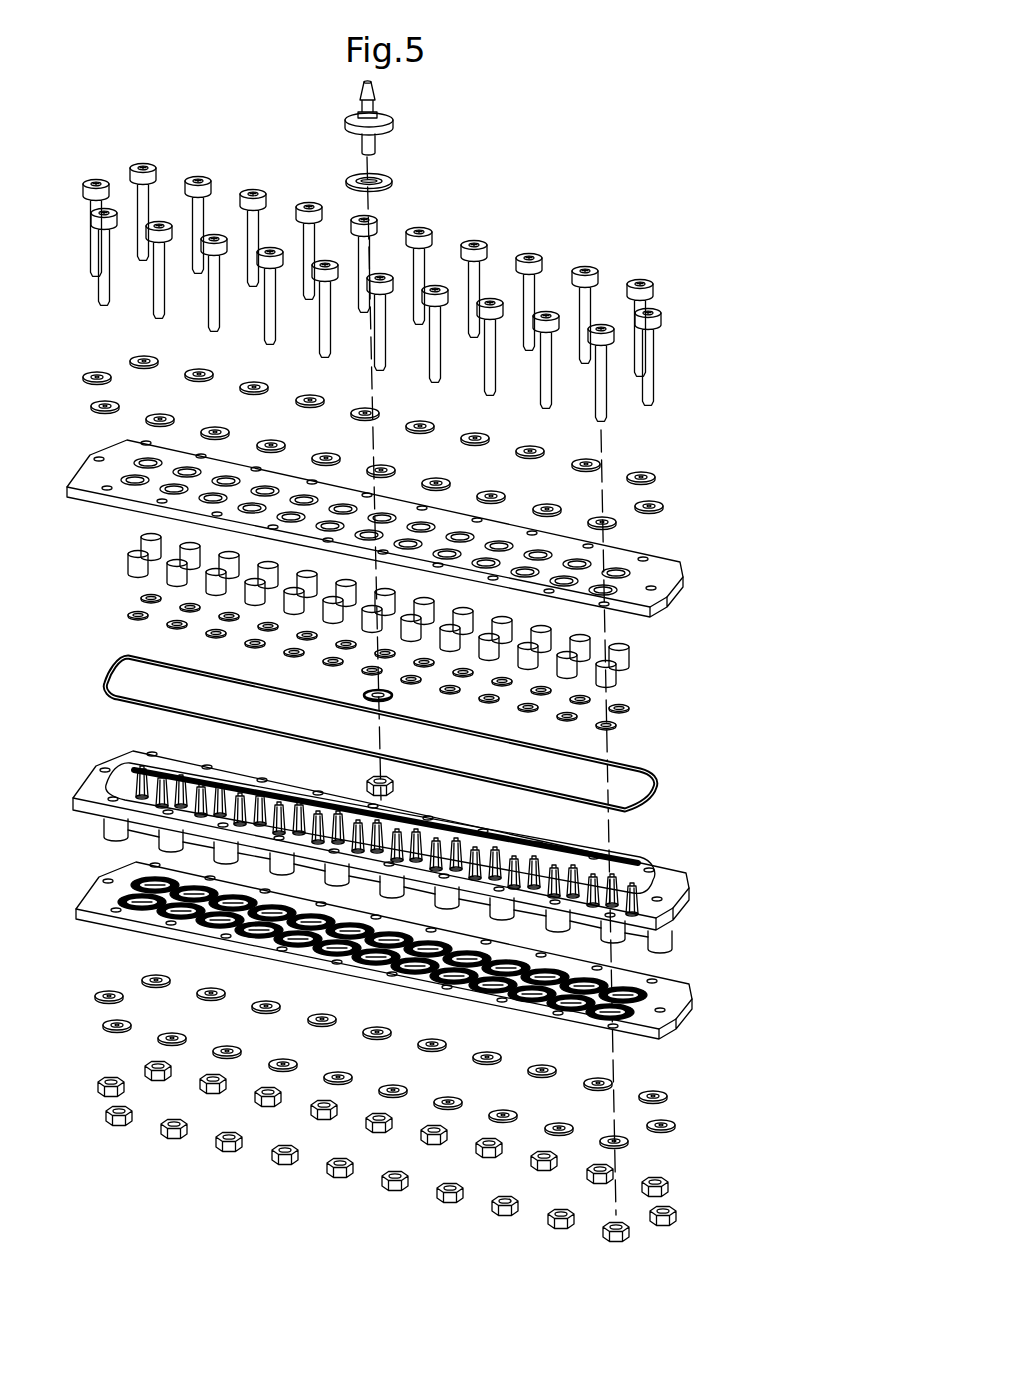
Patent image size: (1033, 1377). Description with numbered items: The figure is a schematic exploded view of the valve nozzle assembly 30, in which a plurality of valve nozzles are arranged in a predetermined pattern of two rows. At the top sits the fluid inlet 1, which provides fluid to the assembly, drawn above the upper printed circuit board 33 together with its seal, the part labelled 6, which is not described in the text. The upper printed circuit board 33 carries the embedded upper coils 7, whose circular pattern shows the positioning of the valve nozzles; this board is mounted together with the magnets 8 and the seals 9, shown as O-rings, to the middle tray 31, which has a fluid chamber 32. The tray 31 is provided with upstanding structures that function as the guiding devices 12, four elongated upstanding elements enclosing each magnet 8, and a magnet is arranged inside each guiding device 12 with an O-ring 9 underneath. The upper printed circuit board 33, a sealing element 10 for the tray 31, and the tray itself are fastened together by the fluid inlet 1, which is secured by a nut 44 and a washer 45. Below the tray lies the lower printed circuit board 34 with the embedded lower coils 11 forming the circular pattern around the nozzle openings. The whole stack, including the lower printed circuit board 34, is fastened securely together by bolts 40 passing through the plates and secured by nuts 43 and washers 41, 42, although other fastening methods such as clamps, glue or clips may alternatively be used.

The valve nozzle assembly 30 is at (100, 135).
The fluid inlet 1 is at (377, 101).
The sealing washer 6 is at (393, 183).
The bolts 40 is at (650, 342).
The washers 41 is at (660, 478).
The upper printed circuit board 33 is at (685, 578).
The upper coils 7 is at (625, 565).
The magnets 8 is at (628, 655).
The seals 9 is at (625, 706).
The washer 45 is at (366, 692).
The nut 44 is at (366, 778).
The sealing element 10 is at (652, 790).
The tray 31 is at (688, 880).
The fluid chamber 32 is at (648, 862).
The guiding devices 12 is at (172, 768).
The lower printed circuit board 34 is at (690, 1003).
The lower coils 11 is at (635, 985).
The washers 42 is at (662, 1092).
The nuts 43 is at (668, 1170).